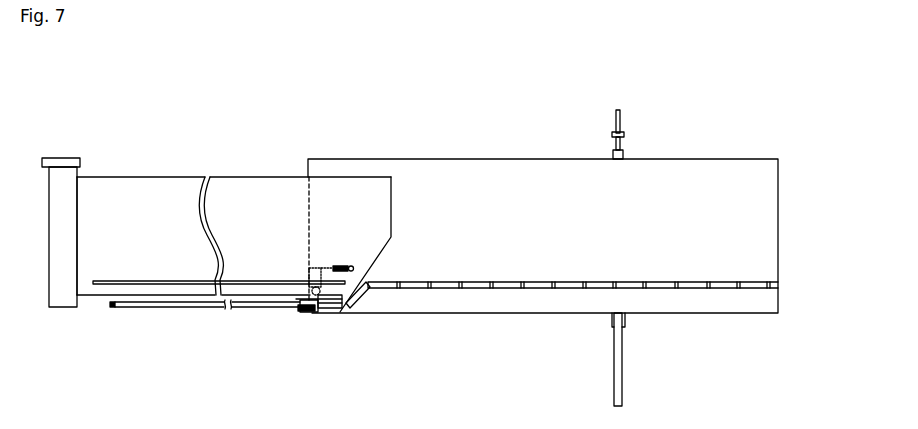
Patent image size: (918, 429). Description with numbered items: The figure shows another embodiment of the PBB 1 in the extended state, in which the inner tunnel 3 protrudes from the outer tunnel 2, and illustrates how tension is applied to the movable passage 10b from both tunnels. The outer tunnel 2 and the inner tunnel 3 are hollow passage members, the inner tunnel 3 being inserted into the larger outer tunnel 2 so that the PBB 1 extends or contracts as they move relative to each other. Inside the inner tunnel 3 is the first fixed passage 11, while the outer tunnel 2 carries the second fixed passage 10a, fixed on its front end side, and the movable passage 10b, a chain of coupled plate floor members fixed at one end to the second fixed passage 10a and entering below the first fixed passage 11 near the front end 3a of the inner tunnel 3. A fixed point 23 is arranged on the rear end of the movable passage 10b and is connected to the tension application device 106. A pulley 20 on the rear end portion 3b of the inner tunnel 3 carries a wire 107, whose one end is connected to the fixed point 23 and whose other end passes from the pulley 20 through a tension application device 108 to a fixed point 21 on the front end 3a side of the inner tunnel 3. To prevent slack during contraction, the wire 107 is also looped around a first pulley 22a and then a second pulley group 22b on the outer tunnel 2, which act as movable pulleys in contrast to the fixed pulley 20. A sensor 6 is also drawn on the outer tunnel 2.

The PBB 1 is at (412, 147).
The outer tunnel 2 is at (458, 175).
The inner tunnel 3 is at (232, 185).
The front end 3a is at (340, 190).
The rear end portion 3b is at (92, 183).
The sensor 6 is at (625, 135).
The second fixed passage 10a is at (765, 285).
The movable passage 10b is at (428, 285).
The first fixed passage 11 is at (343, 308).
The pulley 20 is at (110, 307).
The fixed point 21 is at (354, 268).
The first pulley 22a is at (325, 312).
The second pulley group 22b is at (312, 268).
The fixed point 23 is at (310, 312).
The tension application device 106 is at (300, 308).
The wire 107 is at (192, 307).
The tension application device 108 is at (338, 266).